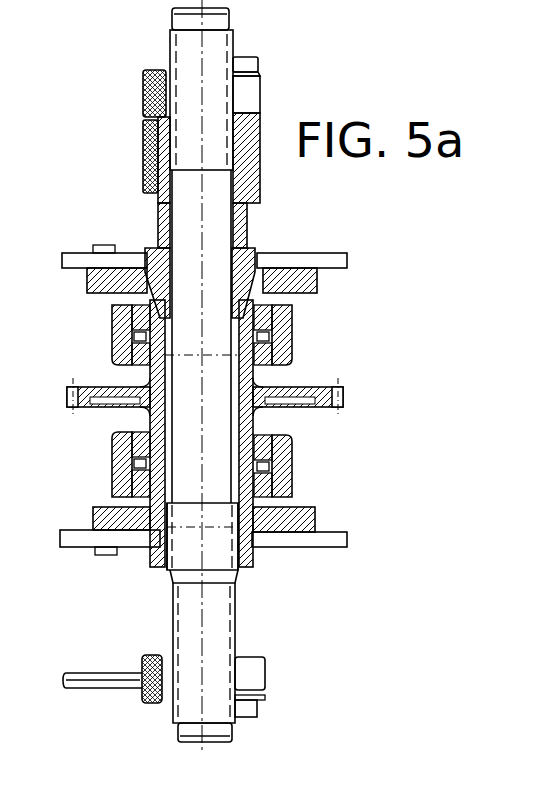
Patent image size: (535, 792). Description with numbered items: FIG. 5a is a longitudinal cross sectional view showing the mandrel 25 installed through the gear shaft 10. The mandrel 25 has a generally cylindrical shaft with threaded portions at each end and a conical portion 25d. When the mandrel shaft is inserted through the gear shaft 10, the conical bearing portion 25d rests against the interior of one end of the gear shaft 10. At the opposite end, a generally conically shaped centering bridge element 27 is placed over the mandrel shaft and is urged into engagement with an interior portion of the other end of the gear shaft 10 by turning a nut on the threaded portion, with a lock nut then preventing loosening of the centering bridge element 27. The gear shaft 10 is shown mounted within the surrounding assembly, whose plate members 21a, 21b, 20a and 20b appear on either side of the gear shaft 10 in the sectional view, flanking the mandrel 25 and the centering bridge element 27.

The mandrel 25 is at (217, 57).
The conical portion 25d is at (254, 566).
The centering bridge element 27 is at (252, 250).
The gear shaft 10 is at (150, 376).
The upper left mounting plate 21a is at (95, 283).
The lower left mounting plate 21b is at (93, 517).
The upper right mounting plate 20a is at (330, 262).
The lower right mounting plate 20b is at (333, 537).